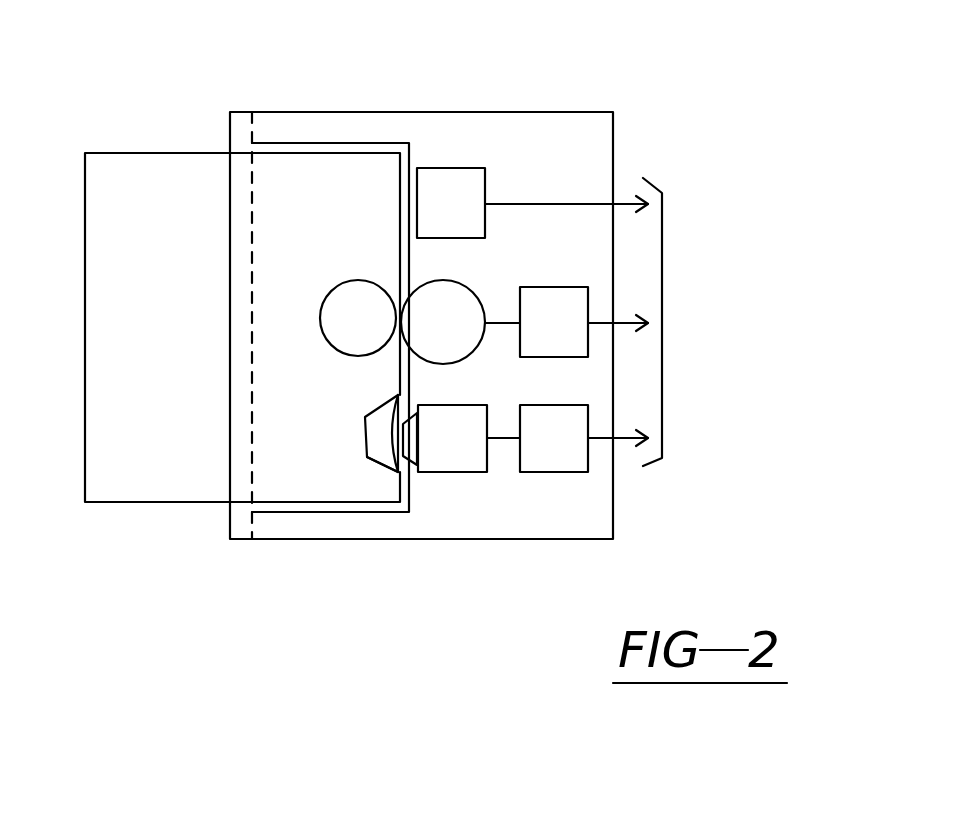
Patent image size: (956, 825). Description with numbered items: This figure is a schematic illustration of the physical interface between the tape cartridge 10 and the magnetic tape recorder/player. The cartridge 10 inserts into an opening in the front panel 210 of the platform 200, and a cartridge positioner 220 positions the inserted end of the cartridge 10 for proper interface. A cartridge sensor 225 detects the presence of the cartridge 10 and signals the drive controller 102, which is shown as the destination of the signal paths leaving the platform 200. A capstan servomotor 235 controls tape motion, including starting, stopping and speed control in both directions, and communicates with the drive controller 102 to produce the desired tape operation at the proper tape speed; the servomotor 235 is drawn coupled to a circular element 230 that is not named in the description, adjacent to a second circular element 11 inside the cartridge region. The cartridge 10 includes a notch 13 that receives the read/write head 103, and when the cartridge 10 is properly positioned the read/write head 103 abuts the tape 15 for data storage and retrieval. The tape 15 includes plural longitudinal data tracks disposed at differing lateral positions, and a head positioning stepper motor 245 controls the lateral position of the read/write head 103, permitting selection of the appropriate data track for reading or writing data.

The cartridge 10 is at (242, 327).
The light source 11 is at (358, 318).
The notch 13 is at (367, 456).
The tape 15 is at (383, 418).
The drive controller 102 is at (708, 322).
The read/write head 103 is at (440, 473).
The platform 200 is at (313, 120).
The front panel 210 is at (228, 130).
The cartridge positioner 220 is at (410, 150).
The cartridge sensor 225 is at (480, 237).
The receiver 230 is at (443, 322).
The capstan servomotor 235 is at (578, 358).
The head positioning stepper motor 245 is at (533, 473).